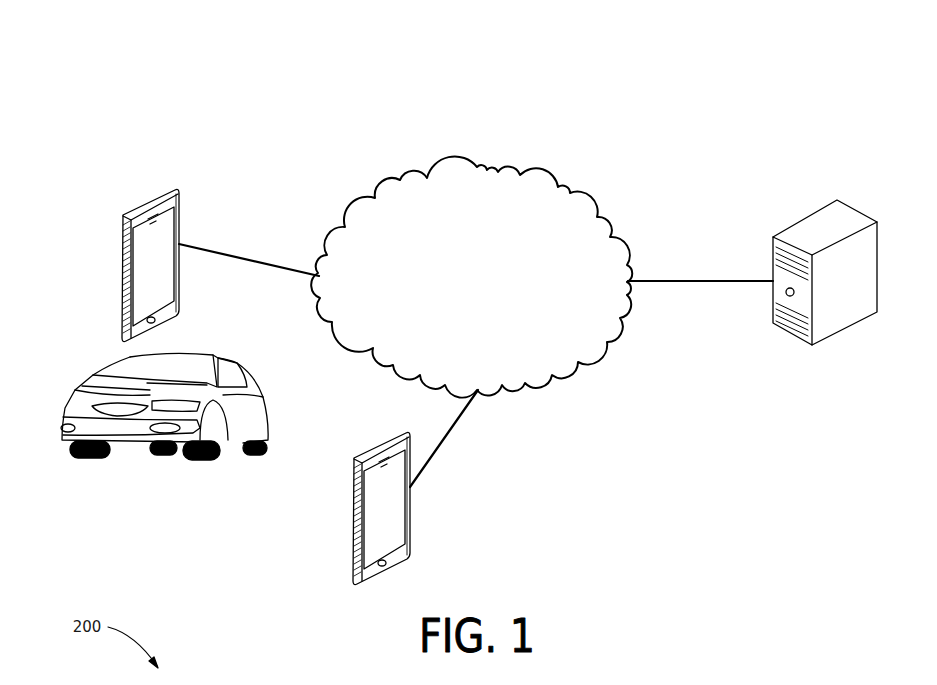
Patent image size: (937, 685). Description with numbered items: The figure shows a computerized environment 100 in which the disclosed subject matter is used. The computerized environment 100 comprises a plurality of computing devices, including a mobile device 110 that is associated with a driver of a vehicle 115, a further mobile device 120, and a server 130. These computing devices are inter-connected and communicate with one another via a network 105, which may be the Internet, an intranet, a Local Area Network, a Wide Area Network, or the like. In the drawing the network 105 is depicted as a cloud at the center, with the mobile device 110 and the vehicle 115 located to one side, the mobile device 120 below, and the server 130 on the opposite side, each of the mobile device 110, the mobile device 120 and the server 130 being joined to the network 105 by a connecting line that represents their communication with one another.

The computerized environment 100 is at (284, 122).
The network 105 is at (533, 172).
The mobile device 110 is at (176, 192).
The vehicle 115 is at (216, 351).
The mobile device 120 is at (405, 433).
The server 130 is at (853, 210).